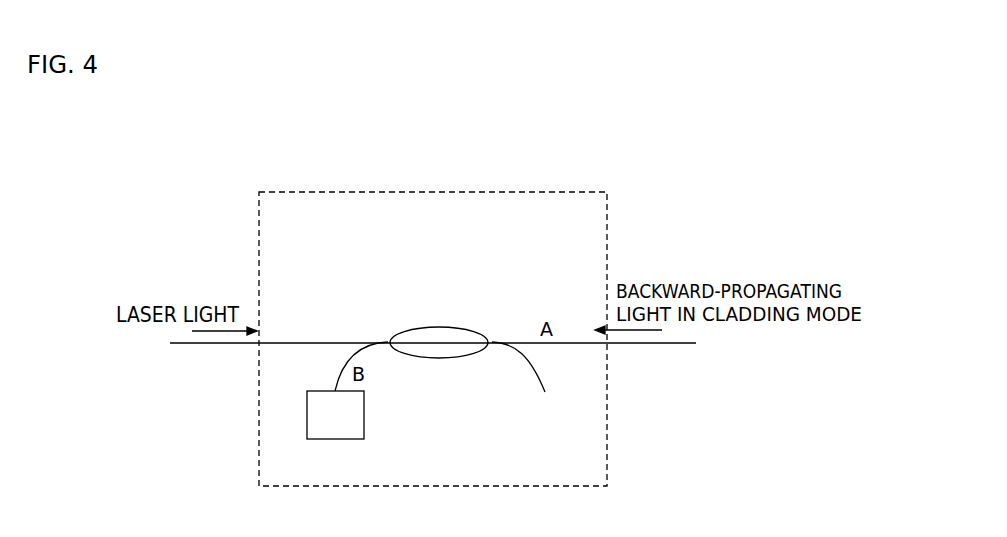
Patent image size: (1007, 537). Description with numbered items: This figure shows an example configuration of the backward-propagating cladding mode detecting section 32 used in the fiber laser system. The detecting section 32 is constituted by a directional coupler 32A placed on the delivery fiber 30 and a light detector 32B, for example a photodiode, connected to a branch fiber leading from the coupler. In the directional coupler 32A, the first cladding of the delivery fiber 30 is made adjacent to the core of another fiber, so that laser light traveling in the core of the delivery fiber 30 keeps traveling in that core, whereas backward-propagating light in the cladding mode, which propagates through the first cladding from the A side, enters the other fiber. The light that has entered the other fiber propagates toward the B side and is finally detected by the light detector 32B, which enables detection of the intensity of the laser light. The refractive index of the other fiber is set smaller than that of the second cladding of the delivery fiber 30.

The delivery fiber 30 is at (654, 347).
The backward-propagating cladding mode detecting section 32 is at (520, 192).
The directional coupler 32A is at (437, 327).
The light detector 32B is at (364, 420).